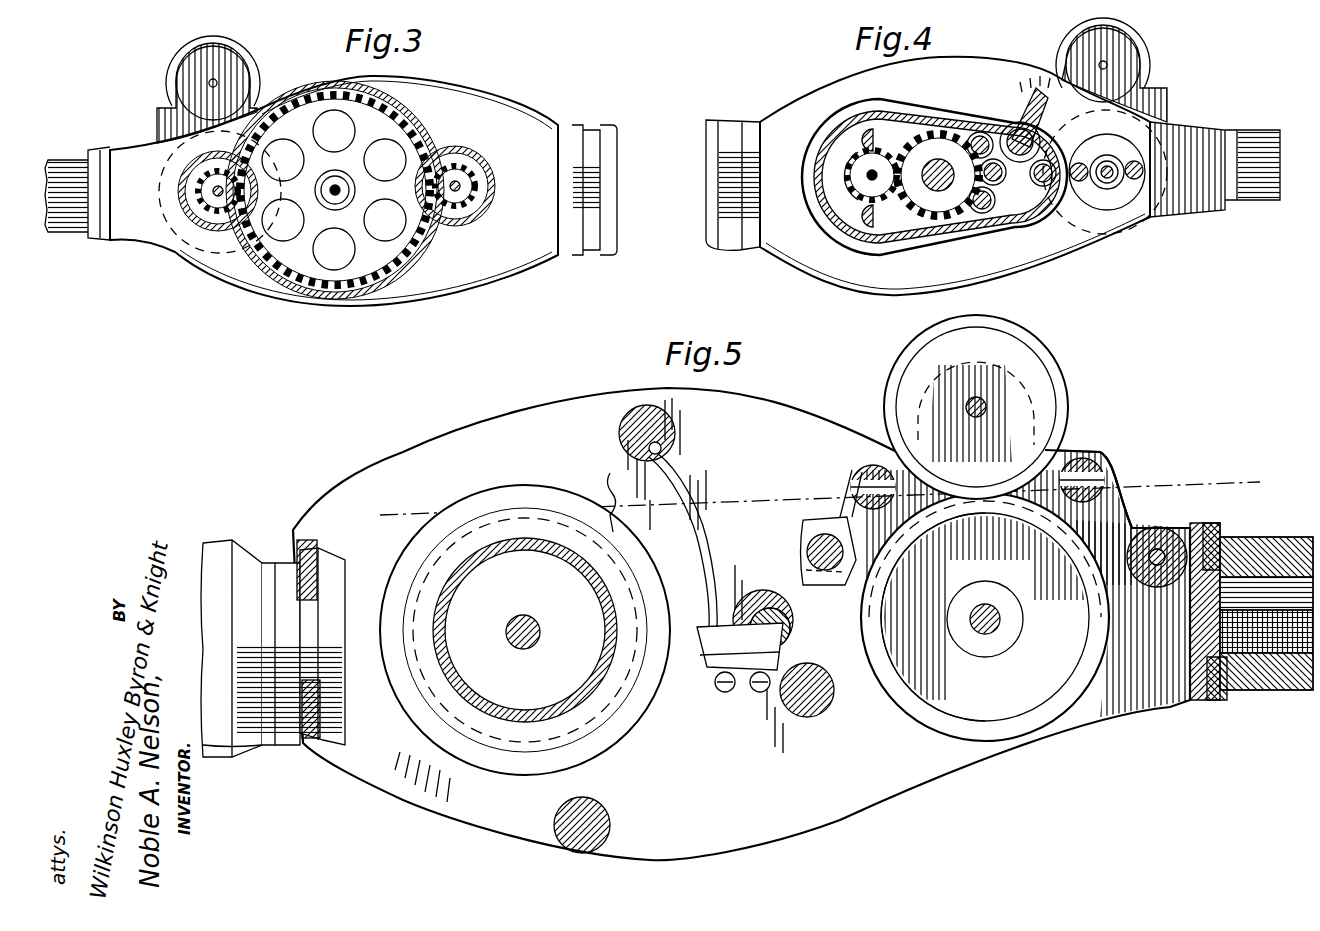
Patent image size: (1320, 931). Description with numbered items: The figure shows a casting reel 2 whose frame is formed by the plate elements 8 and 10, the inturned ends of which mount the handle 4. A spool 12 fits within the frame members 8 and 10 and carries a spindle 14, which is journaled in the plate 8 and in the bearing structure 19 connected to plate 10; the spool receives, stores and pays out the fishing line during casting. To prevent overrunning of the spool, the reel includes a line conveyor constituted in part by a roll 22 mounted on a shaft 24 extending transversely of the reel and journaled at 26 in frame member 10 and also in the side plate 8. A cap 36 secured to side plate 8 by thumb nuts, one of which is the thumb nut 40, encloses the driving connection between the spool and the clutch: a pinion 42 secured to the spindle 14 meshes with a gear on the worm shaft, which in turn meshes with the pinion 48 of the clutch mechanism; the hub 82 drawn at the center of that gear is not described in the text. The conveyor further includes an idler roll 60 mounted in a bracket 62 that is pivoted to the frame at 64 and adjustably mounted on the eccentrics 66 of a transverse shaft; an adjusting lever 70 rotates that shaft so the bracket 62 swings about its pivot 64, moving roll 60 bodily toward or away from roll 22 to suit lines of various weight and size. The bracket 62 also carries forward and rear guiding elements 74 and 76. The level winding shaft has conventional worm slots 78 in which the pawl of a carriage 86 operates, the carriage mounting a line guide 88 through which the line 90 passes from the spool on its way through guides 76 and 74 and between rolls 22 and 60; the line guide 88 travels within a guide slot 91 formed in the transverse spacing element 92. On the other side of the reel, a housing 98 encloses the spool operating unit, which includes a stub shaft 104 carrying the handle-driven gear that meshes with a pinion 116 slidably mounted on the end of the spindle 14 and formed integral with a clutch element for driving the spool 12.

In FIG. 3, the reel 2 is at (556, 265).
In FIG. 4, the reel 2 is at (1176, 230).
In FIG. 5, the reel 2 is at (932, 789).
In FIG. 3, the handle 4 is at (608, 165).
In FIG. 4, the handle 4 is at (712, 205).
In FIG. 5, the handle 4 is at (223, 680).
In FIG. 3, the plate element 8 is at (112, 167).
In FIG. 4, the plate element 10 is at (1062, 262).
In FIG. 5, the plate element 10 is at (525, 630).
In FIG. 5, the spool 12 is at (543, 713).
In FIG. 4, the spindle 14 is at (870, 174).
In FIG. 5, the spindle 14 is at (523, 649).
In FIG. 3, the bearing structure 19 is at (177, 190).
In FIG. 3, the roll 22 is at (155, 232).
In FIG. 4, the roll 22 is at (1152, 212).
In FIG. 5, the roll 22 is at (1043, 717).
In FIG. 5, the shaft 24 is at (986, 634).
In FIG. 4, the journal 26 is at (1105, 190).
In FIG. 3, the cap 36 is at (430, 143).
In FIG. 3, the thumb nut 40 is at (385, 258).
In FIG. 3, the pinion 42 is at (215, 217).
In FIG. 3, the pinion 48 is at (490, 174).
In FIG. 3, the idler roll 60 is at (248, 50).
In FIG. 4, the idler roll 60 is at (1140, 44).
In FIG. 5, the idler roll 60 is at (1057, 370).
In FIG. 3, the bracket 62 is at (163, 112).
In FIG. 4, the bracket 62 is at (1170, 90).
In FIG. 5, the bracket 62 is at (1063, 453).
In FIG. 5, the pivot 64 is at (1167, 550).
In FIG. 5, the eccentric 66 is at (808, 547).
In FIG. 4, the adjusting lever 70 is at (1023, 112).
In FIG. 5, the forward guiding element 74 is at (1105, 460).
In FIG. 5, the rear guiding element 76 is at (860, 462).
In FIG. 5, the worm slots 78 is at (787, 643).
In FIG. 3, the hub 82 is at (345, 195).
In FIG. 5, the carriage 86 is at (747, 663).
In FIG. 5, the line guide 88 is at (693, 492).
In FIG. 5, the line 90 is at (618, 467).
In FIG. 5, the guide slot 91 is at (667, 437).
In FIG. 5, the transverse spacing element 92 is at (633, 410).
In FIG. 4, the housing 98 is at (1023, 217).
In FIG. 4, the stub shaft 104 is at (938, 159).
In FIG. 4, the pinion 116 is at (853, 200).